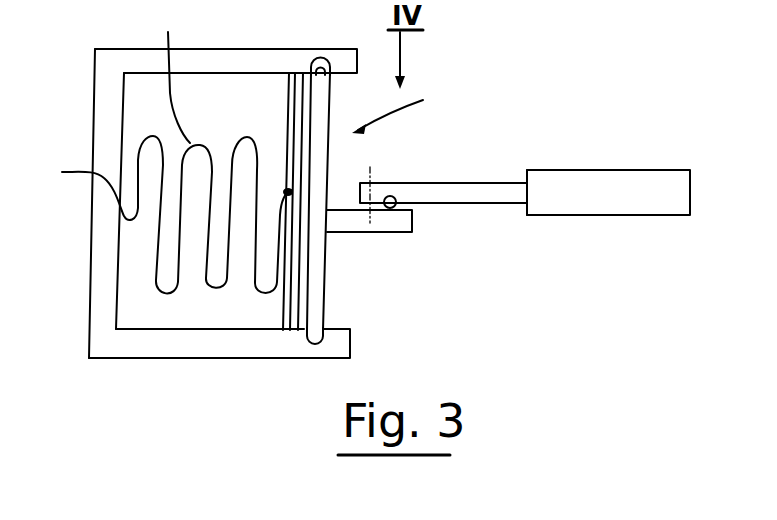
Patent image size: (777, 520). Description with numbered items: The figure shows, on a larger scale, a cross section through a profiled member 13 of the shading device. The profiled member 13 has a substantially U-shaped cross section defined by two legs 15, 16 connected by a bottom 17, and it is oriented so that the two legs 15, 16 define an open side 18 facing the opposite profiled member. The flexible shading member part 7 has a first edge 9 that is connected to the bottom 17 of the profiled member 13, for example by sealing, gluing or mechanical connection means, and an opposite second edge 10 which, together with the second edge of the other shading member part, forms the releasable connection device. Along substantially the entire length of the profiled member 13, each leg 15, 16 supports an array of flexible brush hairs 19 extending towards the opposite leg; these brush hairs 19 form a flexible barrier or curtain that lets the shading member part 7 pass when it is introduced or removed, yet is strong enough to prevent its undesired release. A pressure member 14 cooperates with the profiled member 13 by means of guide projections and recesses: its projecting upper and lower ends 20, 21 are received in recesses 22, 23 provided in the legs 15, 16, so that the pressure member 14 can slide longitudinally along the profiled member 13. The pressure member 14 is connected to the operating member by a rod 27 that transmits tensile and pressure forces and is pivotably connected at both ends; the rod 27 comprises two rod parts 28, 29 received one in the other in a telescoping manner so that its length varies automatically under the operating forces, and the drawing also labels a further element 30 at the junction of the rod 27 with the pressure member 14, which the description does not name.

The shading member part 7 is at (174, 75).
The first edge 9 is at (168, 214).
The second edge 10 is at (290, 192).
The profiled member 13 is at (175, 364).
The pressure member 14 is at (326, 233).
The leg 15 is at (213, 58).
The leg 16 is at (247, 348).
The bottom 17 is at (101, 211).
The open side 18 is at (403, 110).
The brush hairs 19 is at (291, 117).
The projecting upper end 20 is at (321, 58).
The projecting lower end 21 is at (320, 335).
The recess 22 is at (327, 60).
The recess 23 is at (310, 340).
The rod 27 is at (538, 160).
The rod part 28 is at (632, 185).
The rod part 29 is at (460, 195).
The terminal block 30 is at (392, 213).